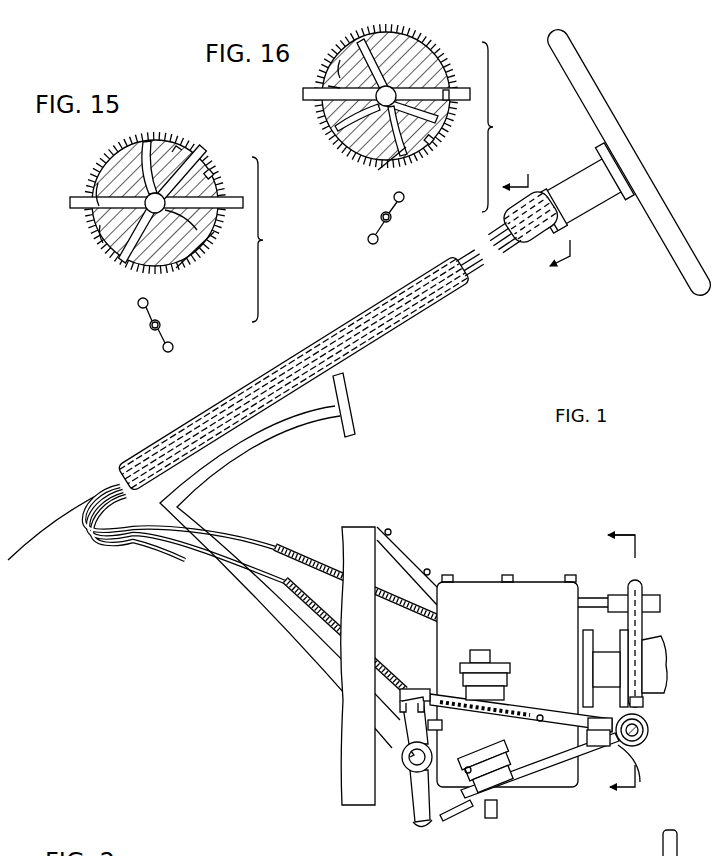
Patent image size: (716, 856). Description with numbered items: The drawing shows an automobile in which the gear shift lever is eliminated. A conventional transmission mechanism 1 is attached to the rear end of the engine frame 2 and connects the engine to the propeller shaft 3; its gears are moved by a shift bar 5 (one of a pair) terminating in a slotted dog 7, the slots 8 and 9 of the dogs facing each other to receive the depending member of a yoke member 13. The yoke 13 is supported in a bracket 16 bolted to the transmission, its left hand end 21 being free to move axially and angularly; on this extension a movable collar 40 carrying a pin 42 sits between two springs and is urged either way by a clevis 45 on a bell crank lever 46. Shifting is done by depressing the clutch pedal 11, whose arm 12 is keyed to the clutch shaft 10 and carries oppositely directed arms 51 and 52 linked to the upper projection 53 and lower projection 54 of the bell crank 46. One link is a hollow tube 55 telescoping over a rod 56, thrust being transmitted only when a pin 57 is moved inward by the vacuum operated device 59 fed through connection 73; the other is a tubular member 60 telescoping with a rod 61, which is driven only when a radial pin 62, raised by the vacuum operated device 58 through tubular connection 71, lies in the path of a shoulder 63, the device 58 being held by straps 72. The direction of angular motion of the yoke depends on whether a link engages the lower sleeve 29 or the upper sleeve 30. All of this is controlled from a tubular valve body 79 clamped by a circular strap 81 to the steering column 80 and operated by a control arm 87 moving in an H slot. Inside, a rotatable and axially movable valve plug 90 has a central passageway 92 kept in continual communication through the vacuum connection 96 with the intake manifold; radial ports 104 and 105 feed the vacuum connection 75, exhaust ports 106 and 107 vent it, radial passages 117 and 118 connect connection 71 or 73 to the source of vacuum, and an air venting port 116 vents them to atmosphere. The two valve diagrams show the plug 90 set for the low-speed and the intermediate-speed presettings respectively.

In FIG. 1, the transmission mechanism 1 is at (480, 590).
In FIG. 1, the engine frame 2 is at (392, 560).
In FIG. 1, the propeller shaft 3 is at (670, 641).
In FIG. 1, the shift bar 5 is at (588, 598).
In FIG. 1, the slotted dog 7 is at (663, 600).
In FIG. 1, the slot 8 is at (470, 230).
In FIG. 1, the slot 9 is at (546, 215).
In FIG. 1, the clutch shaft 10 is at (404, 762).
In FIG. 1, the clutch pedal 11 is at (356, 417).
In FIG. 1, the pedal arm 12 is at (288, 632).
In FIG. 1, the yoke member 13 is at (645, 625).
In FIG. 1, the bracket 16 is at (648, 706).
In FIG. 1, the left hand end of yoke 21 is at (650, 741).
In FIG. 15, the lower sleeve 29 is at (174, 348).
In FIG. 16, the lower sleeve 29 is at (368, 241).
In FIG. 15, the upper sleeve 30 is at (138, 304).
In FIG. 16, the upper sleeve 30 is at (405, 194).
In FIG. 1, the movable collar 40 is at (650, 730).
In FIG. 1, the pin 42 is at (645, 750).
In FIG. 1, the clevis 45 is at (628, 770).
In FIG. 1, the bell crank lever 46 is at (589, 740).
In FIG. 1, the arm 51 is at (400, 708).
In FIG. 1, the arm 52 is at (418, 808).
In FIG. 1, the upper projection 53 is at (572, 714).
In FIG. 1, the lower projection 54 is at (590, 760).
In FIG. 1, the tube 55 is at (455, 822).
In FIG. 1, the rod 56 is at (572, 770).
In FIG. 1, the pin 57 is at (497, 818).
In FIG. 1, the vacuum operated device 58 is at (470, 664).
In FIG. 1, the vacuum operated device 59 is at (465, 769).
In FIG. 1, the tubular member 60 is at (515, 697).
In FIG. 1, the rod 61 is at (540, 722).
In FIG. 1, the radial pin 62 is at (430, 727).
In FIG. 1, the shoulder 63 is at (455, 684).
In FIG. 1, the tubular connection 71 is at (478, 633).
In FIG. 1, the straps 72 is at (510, 679).
In FIG. 1, the connection 73 is at (509, 757).
In FIG. 15, the vacuum connection 75 is at (236, 199).
In FIG. 16, the vacuum connection 75 is at (456, 92).
In FIG. 15, the tubular valve body 79 is at (192, 263).
In FIG. 16, the tubular valve body 79 is at (340, 152).
In FIG. 1, the tubular valve body 79 is at (545, 174).
In FIG. 1, the steering column 80 is at (407, 325).
In FIG. 1, the circular strap 81 is at (581, 219).
In FIG. 1, the control arm 87 is at (589, 185).
In FIG. 15, the valve plug 90 is at (100, 160).
In FIG. 16, the valve plug 90 is at (430, 56).
In FIG. 15, the central passageway 92 is at (140, 141).
In FIG. 16, the central passageway 92 is at (330, 121).
In FIG. 1, the vacuum connection 96 is at (30, 552).
In FIG. 15, the radial port 104 is at (205, 157).
In FIG. 16, the radial port 104 is at (363, 160).
In FIG. 15, the radial port 105 is at (199, 238).
In FIG. 16, the radial port 105 is at (364, 159).
In FIG. 15, the exhaust port 106 is at (180, 146).
In FIG. 16, the exhaust port 106 is at (447, 110).
In FIG. 15, the exhaust port 107 is at (213, 175).
In FIG. 16, the exhaust port 107 is at (435, 145).
In FIG. 15, the air venting port 116 is at (98, 237).
In FIG. 16, the air venting port 116 is at (345, 62).
In FIG. 15, the radial passage 117 is at (95, 187).
In FIG. 16, the radial passage 117 is at (372, 34).
In FIG. 15, the radial passage 118 is at (126, 261).
In FIG. 16, the radial passage 118 is at (330, 88).